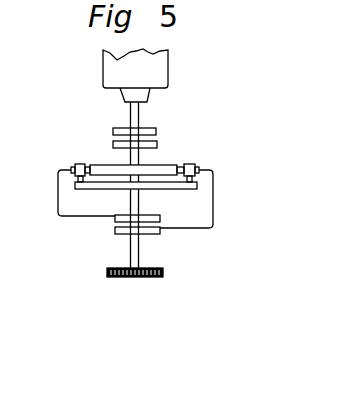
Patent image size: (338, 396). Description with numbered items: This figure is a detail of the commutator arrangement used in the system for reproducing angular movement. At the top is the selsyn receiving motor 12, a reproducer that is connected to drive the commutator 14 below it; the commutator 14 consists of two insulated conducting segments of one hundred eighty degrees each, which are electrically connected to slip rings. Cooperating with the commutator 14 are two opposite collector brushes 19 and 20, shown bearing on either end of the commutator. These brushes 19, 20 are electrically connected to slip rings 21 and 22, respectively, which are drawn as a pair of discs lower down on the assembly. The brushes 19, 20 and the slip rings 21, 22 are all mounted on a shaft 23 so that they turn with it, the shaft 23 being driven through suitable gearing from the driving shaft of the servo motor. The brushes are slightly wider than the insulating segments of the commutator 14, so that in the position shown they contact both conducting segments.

The selsyn receiving motor 12 is at (152, 77).
The commutator 14 is at (165, 168).
The collector brush 19 is at (73, 168).
The collector brush 20 is at (200, 165).
The slip ring 21 is at (157, 216).
The slip ring 22 is at (155, 228).
The shaft 23 is at (131, 250).